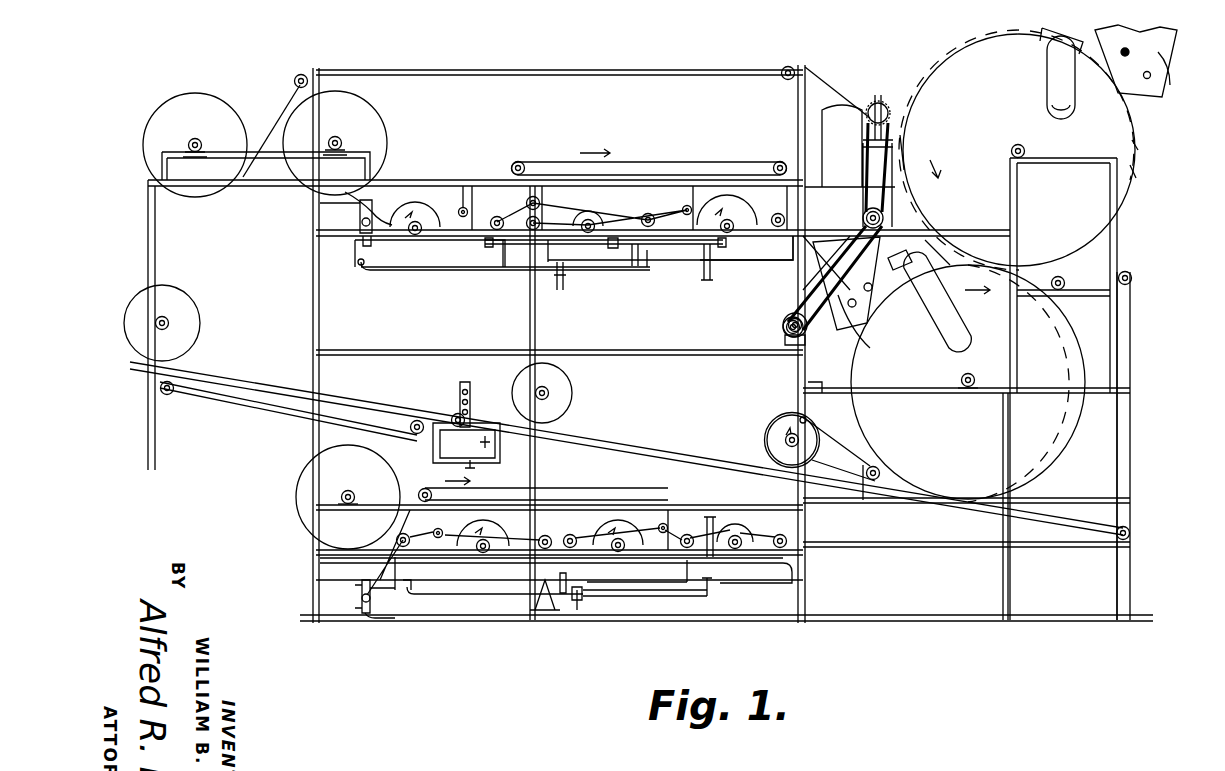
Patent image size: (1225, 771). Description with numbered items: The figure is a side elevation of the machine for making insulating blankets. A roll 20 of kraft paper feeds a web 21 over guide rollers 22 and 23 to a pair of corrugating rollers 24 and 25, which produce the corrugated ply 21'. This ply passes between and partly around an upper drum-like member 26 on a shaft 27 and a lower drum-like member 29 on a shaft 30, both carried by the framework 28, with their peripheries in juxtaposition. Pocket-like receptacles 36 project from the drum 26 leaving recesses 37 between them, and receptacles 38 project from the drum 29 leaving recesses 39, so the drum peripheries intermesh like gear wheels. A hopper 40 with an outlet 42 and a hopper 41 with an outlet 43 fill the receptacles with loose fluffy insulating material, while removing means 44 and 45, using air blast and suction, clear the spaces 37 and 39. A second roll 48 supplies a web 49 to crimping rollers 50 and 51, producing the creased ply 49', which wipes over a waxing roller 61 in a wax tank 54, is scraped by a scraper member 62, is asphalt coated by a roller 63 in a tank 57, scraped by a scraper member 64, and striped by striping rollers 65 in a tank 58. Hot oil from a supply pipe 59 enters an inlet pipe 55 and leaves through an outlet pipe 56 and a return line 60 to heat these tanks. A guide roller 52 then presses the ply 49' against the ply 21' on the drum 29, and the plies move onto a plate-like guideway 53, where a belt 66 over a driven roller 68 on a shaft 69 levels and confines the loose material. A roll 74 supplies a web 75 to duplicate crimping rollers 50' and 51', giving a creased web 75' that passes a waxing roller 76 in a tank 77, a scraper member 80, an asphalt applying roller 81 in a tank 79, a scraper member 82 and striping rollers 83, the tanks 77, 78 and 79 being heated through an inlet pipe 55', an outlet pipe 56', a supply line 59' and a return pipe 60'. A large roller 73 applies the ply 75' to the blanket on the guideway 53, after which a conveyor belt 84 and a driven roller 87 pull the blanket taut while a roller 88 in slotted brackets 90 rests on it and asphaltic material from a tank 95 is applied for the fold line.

The roll 20 is at (200, 100).
The web 21 is at (650, 334).
The corrugated or crimped ply 21' is at (924, 149).
The guide roller 22 is at (302, 74).
The guide roller 23 is at (787, 80).
The corrugating roller 24 is at (872, 100).
The corrugating roller 25 is at (890, 110).
The upper drum-like member 26 is at (1133, 142).
The shaft 27 is at (1028, 152).
The framework 28 is at (797, 390).
The lower drum-like member 29 is at (1050, 458).
The shaft 30 is at (972, 372).
The receptacles 36 is at (1136, 170).
The recesses 37 is at (1137, 150).
The receptacles 38 is at (1060, 315).
The recesses 39 is at (1068, 340).
The hopper 40 is at (1170, 68).
The hopper 41 is at (860, 335).
The hopper outlet 42 is at (1115, 75).
The hopper outlet 43 is at (878, 318).
The removing means 44 is at (1047, 48).
The removing means 45 is at (935, 250).
The roll 48 is at (300, 510).
The web 49 is at (338, 570).
The scored or creased ply 49' is at (772, 466).
The crimping roller 50 is at (324, 596).
The spray pipe 50' is at (390, 197).
The crimping roller 51 is at (379, 624).
The pipe elbow 51' is at (487, 255).
The guide roller 52 is at (1056, 277).
The plate-like guideway 53 is at (380, 398).
The tank 54 is at (520, 600).
The inlet pipe 55 is at (545, 611).
The inlet pipe 55' is at (605, 274).
The outlet pipe 56 is at (578, 617).
The outlet pipe 56' is at (430, 275).
The tank 57 is at (690, 592).
The tank 58 is at (765, 590).
The supply pipe 59 is at (734, 515).
The hot oil supply line 59' is at (702, 280).
The return line 60 is at (589, 612).
The return pipe 60' is at (576, 291).
The waxing roller 61 is at (483, 520).
The scraper member 62 is at (398, 536).
The asphalt applying roller 63 is at (625, 518).
The scraper member 64 is at (688, 520).
The striping rollers 65 is at (745, 530).
The belt 66 is at (824, 447).
The roller 68 is at (767, 438).
The shaft 69 is at (802, 420).
The roller 73 is at (560, 410).
The roll 74 is at (363, 118).
The web 75 is at (336, 213).
The creased web 75' is at (588, 233).
The waxing roller 76 is at (463, 206).
The tank 77 is at (460, 270).
The tank 78 is at (632, 268).
The tank 79 is at (770, 262).
The scraper member 80 is at (497, 215).
The asphalt applying roller 81 is at (737, 205).
The scraper member 82 is at (682, 212).
The striping rollers 83 is at (595, 214).
The conveyor belt 84 is at (270, 420).
The roller 87 is at (203, 318).
The roller 88 is at (468, 415).
The brackets 90 is at (466, 380).
The tank 95 is at (433, 450).